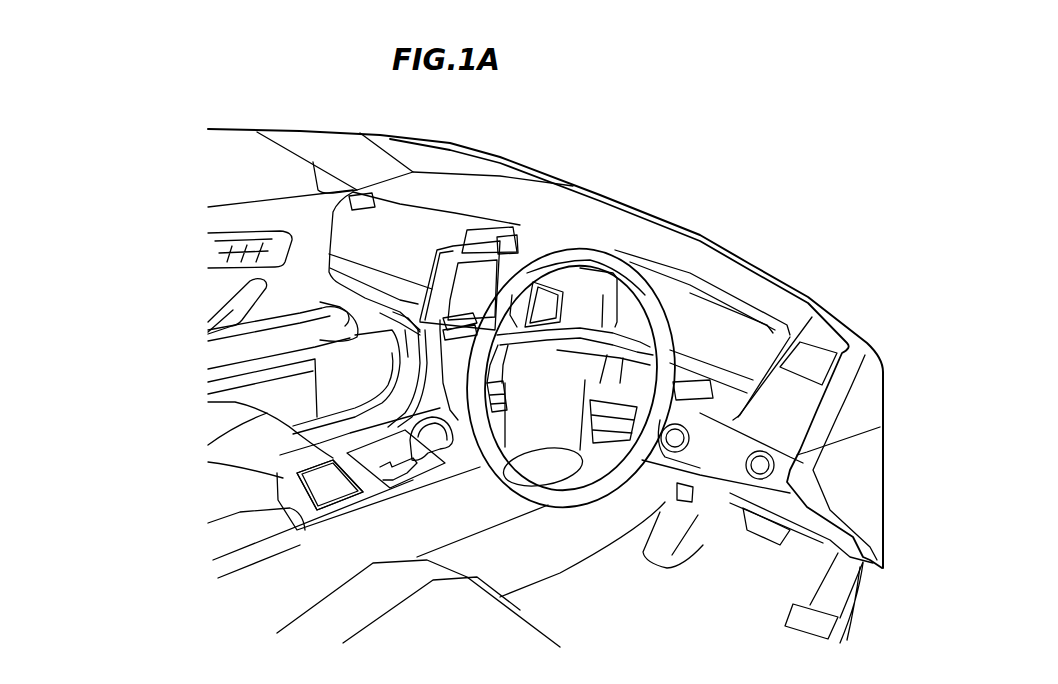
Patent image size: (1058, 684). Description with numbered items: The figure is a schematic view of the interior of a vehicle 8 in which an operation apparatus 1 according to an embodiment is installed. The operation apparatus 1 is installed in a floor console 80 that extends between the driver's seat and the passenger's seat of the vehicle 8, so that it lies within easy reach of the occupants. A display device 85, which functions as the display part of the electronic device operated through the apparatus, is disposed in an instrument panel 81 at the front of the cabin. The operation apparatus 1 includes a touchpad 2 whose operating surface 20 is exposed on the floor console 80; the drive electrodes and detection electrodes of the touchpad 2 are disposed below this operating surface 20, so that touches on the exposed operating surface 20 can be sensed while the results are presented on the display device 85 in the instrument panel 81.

The vehicle 8 is at (762, 86).
The display device 85 is at (460, 280).
The instrument panel 81 is at (517, 240).
The operation apparatus 1 is at (295, 478).
The touchpad 2 is at (305, 492).
The operating surface 20 is at (290, 482).
The floor console 80 is at (373, 510).